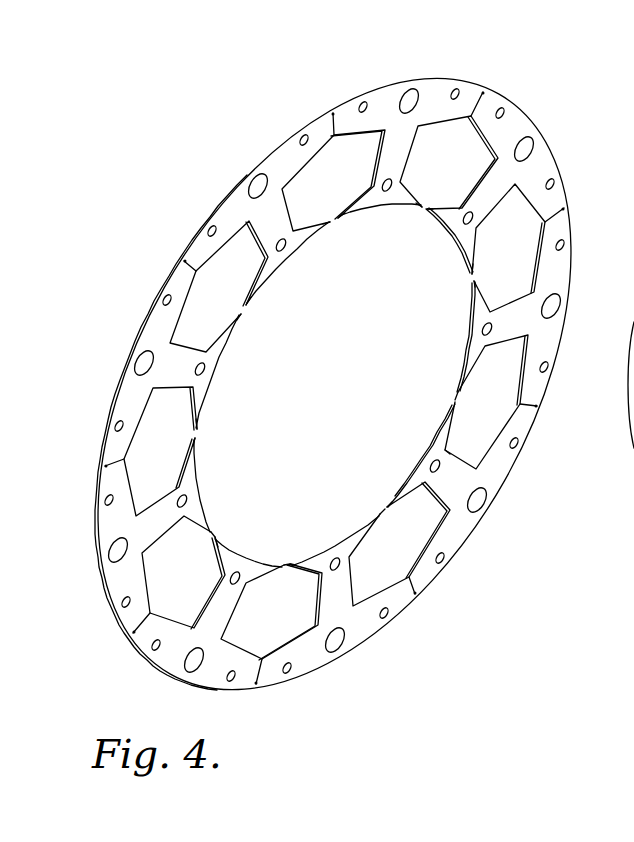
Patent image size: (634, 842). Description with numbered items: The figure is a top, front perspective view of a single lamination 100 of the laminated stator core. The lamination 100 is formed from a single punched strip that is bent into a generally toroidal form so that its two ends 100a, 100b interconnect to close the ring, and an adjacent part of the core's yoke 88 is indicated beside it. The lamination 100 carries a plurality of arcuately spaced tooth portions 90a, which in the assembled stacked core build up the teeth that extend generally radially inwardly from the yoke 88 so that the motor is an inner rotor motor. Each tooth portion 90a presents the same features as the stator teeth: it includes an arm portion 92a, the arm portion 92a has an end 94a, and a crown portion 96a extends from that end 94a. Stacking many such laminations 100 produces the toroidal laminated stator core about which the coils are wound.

The lamination 100 is at (317, 385).
The end of the punched strip 100a is at (330, 116).
The end of the punched strip 100b is at (348, 106).
The arm portion 92a is at (397, 138).
The end of the arm portion 94a is at (398, 178).
The crown portion 96a is at (390, 200).
The tooth portion 90a is at (486, 210).
The yoke 88 is at (633, 549).